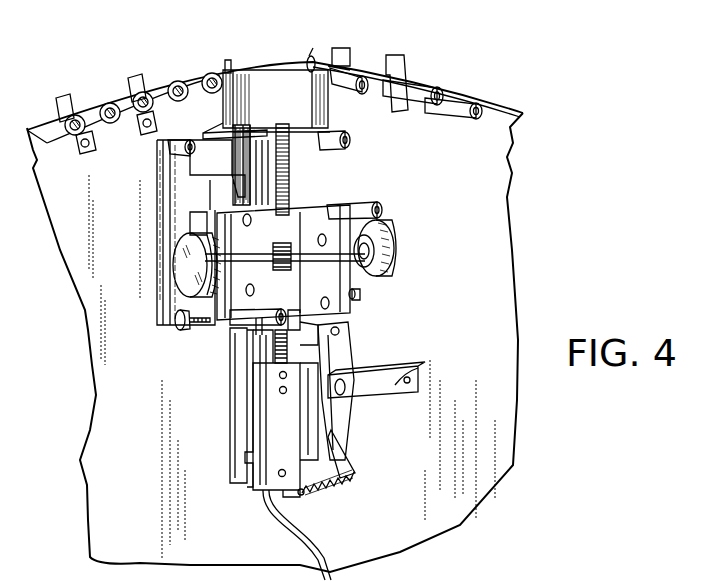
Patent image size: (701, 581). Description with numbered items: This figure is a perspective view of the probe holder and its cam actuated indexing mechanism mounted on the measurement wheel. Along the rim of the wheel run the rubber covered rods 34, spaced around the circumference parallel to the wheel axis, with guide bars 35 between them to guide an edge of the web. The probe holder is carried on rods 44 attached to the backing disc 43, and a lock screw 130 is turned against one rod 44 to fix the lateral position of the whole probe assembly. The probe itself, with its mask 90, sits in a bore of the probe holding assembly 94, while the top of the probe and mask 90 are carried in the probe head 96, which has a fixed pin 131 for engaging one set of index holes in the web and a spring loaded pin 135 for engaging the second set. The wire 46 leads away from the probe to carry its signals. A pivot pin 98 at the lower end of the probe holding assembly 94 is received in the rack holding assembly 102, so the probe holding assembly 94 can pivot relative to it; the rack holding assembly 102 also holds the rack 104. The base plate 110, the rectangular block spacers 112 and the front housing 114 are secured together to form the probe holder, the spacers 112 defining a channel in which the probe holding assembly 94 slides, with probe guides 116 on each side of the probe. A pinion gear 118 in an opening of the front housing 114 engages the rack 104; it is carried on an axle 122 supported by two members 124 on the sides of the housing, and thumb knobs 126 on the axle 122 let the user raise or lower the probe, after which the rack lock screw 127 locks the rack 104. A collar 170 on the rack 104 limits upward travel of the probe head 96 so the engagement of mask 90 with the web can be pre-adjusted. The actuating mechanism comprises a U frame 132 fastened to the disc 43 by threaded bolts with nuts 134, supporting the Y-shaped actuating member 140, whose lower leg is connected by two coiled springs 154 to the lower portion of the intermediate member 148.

The rubber covered rods 34 is at (457, 105).
The guide bars 35 is at (400, 70).
The backing disc 43 is at (466, 289).
The rods 44 is at (380, 207).
The wire 46 is at (277, 528).
The mask 90 is at (267, 65).
The probe holding assembly 94 is at (240, 422).
The probe head 96 is at (243, 64).
The pivot pin 98 is at (280, 474).
The rack holding assembly 102 is at (283, 443).
The rack 104 is at (288, 188).
The base plate 110 is at (165, 198).
The rectangular block spacers 112 is at (193, 232).
The front housing 114 is at (306, 239).
The probe guides 116 is at (232, 158).
The pinion gear 118 is at (300, 272).
The axle 122 is at (300, 262).
The members 124 is at (375, 258).
The thumb knobs 126 is at (183, 264).
The rack lock screw 127 is at (362, 294).
The lock screw 130 is at (177, 328).
The fixed pin 131 is at (226, 64).
The U frame 132 is at (402, 393).
The threaded bolts with nuts 134 is at (410, 372).
The spring loaded pin 135 is at (320, 52).
The actuating member 140 is at (352, 350).
The intermediate member 148 is at (345, 455).
The coiled springs 154 is at (335, 483).
The collar 170 is at (270, 327).